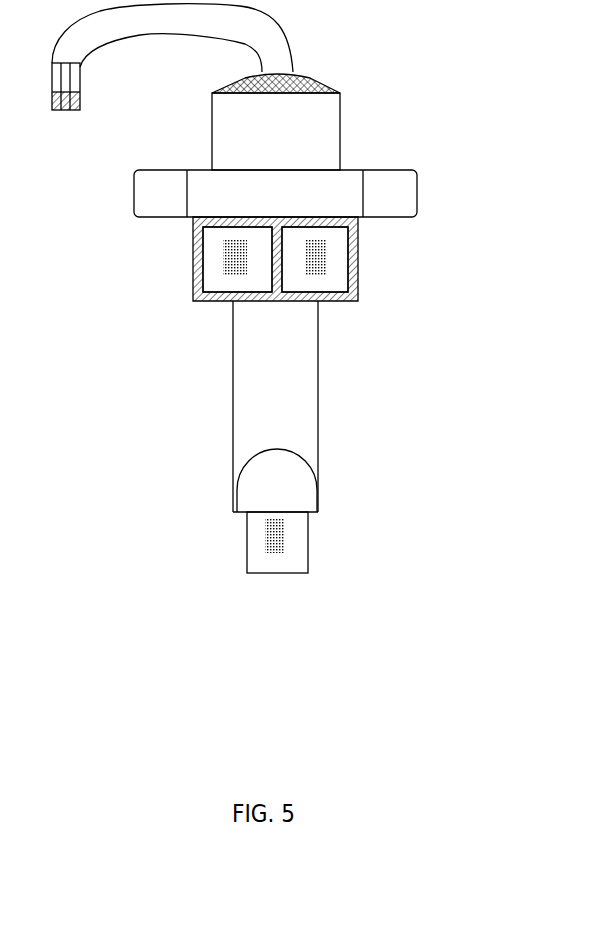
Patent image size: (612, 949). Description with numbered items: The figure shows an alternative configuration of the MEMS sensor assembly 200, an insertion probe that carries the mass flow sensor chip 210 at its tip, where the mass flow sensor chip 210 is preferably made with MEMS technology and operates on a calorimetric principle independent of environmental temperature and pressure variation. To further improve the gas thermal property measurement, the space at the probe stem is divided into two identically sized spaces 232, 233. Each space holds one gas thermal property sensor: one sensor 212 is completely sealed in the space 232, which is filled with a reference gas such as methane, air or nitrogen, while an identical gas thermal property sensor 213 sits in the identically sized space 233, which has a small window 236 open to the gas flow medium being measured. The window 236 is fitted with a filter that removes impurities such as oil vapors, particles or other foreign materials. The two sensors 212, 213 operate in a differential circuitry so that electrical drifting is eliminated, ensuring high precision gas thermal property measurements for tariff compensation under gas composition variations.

The MEMS sensor assembly 200 is at (340, 191).
The mass flow sensor chip 210 is at (268, 546).
The gas thermal property sensor 212 is at (232, 264).
The gas thermal property sensor 213 is at (312, 258).
The space 232 is at (233, 290).
The space 233 is at (328, 292).
The window 236 is at (358, 280).